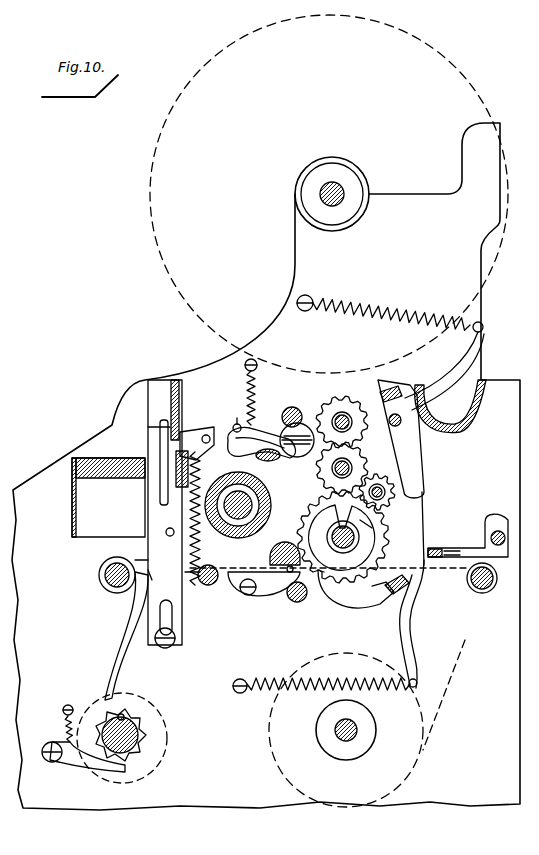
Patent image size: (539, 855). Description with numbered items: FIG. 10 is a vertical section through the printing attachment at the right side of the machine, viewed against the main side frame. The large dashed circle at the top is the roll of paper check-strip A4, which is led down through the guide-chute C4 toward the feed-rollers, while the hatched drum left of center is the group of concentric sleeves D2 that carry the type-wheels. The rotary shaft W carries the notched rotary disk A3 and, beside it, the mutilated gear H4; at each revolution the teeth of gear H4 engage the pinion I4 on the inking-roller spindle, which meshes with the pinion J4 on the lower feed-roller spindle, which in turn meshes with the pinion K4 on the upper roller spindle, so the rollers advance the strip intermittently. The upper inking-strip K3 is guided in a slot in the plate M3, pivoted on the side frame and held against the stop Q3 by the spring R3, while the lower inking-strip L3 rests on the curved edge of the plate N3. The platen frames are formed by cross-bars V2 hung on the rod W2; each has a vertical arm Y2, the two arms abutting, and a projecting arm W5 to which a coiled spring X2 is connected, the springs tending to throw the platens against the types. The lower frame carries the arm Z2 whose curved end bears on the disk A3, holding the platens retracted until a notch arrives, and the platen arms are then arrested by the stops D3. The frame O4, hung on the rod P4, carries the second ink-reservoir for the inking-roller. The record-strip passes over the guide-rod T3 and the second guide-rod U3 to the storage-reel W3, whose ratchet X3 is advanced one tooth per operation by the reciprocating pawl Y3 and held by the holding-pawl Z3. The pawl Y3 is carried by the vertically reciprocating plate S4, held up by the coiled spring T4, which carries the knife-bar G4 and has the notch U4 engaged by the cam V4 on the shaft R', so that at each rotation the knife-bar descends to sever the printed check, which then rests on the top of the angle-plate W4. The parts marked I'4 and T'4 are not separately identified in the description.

The paper check-strip A4 is at (152, 234).
The coiled spring X2 is at (390, 316).
The projecting arm W5 is at (426, 380).
The guide-chute C4 is at (472, 412).
The vertical arm Y2 is at (408, 464).
The cross bar or plate V2 is at (396, 398).
The rod W2 is at (396, 431).
The pinion K4 is at (350, 402).
The pinion J4 is at (360, 462).
The mutilated gear or segment H4 is at (325, 515).
The rotary shaft W is at (360, 540).
The pinion I4 is at (374, 524).
The forwardly-extending arm Z2 is at (364, 603).
The concentric sleeves D2 is at (240, 490).
The coiled spring T4 is at (200, 570).
The knife-bar G4 is at (180, 392).
The bracket I'4 is at (195, 446).
The spring T'4 is at (176, 518).
The angle-plate W4 is at (108, 457).
The spring R3 is at (258, 378).
The plate M3 is at (266, 434).
The stop Q3 is at (234, 415).
The stops D3 is at (293, 408).
The inking-strip K3 is at (275, 462).
The plate N3 is at (268, 594).
The inking-strip L3 is at (290, 555).
The guide-rod U3 is at (210, 588).
The rotary disk A3 is at (330, 573).
The vertically-reciprocating plate or bar S4 is at (196, 566).
The notch U4 is at (152, 572).
The cam V4 is at (133, 549).
The rod P4 is at (500, 530).
The frame O4 is at (466, 548).
The guide-rod T3 is at (468, 582).
The shaft R' is at (104, 575).
The reciprocating pawl Y3 is at (118, 648).
The storage-reel W3 is at (145, 725).
The ratchet X3 is at (128, 716).
The holding-pawl Z3 is at (76, 768).